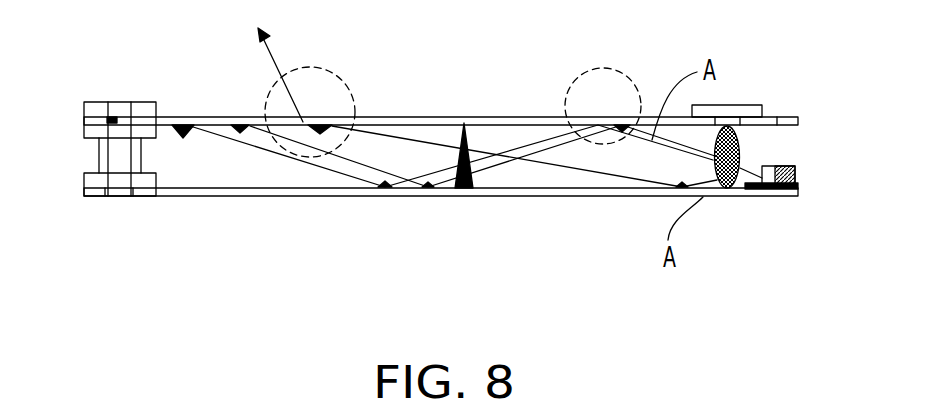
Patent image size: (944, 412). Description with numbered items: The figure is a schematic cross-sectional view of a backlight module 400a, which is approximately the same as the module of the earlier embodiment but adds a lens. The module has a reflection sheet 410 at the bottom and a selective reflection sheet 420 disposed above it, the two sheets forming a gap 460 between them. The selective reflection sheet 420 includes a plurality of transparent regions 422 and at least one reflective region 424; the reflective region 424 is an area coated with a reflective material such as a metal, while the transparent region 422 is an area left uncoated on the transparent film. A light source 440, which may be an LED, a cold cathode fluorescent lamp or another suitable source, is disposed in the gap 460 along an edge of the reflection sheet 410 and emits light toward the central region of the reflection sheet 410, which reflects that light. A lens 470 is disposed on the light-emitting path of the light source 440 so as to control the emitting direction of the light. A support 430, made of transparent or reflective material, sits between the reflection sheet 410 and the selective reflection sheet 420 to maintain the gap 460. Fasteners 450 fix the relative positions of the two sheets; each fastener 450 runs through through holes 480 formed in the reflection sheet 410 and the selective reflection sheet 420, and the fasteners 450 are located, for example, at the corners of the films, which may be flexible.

The backlight module 400a is at (792, 378).
The reflection sheet 410 is at (789, 196).
The selective reflection sheet 420 is at (798, 121).
The transparent region 422 is at (352, 90).
The reflective region 424 is at (638, 87).
The support 430 is at (473, 180).
The light source 440 is at (770, 189).
The fastener 450 is at (120, 155).
The gap 460 is at (222, 167).
The lens 470 is at (740, 150).
The through hole 480 is at (118, 120).